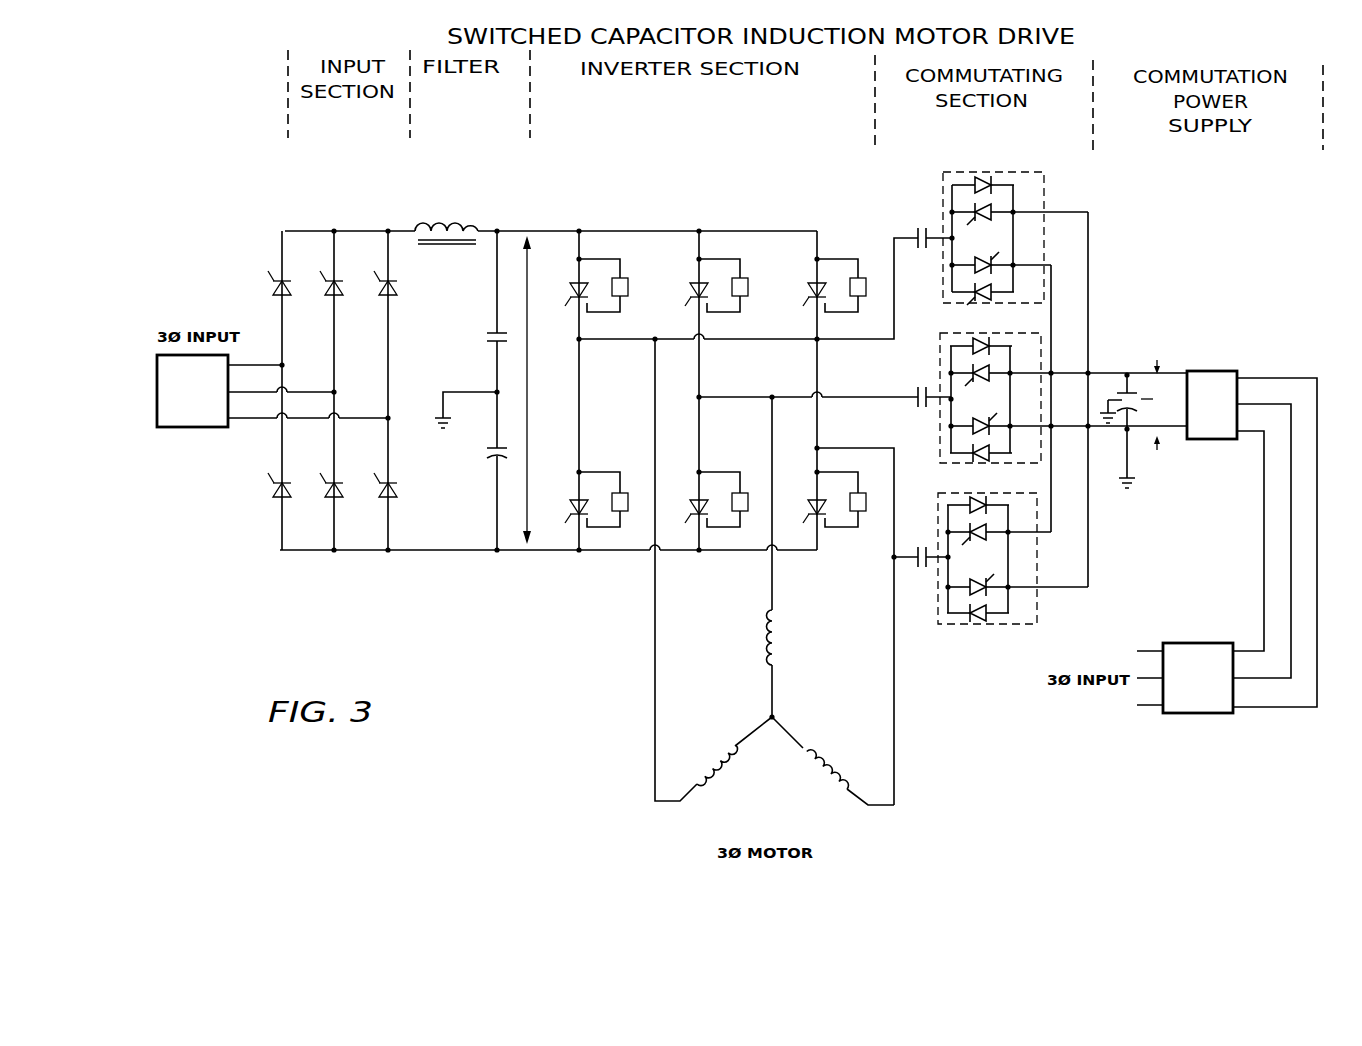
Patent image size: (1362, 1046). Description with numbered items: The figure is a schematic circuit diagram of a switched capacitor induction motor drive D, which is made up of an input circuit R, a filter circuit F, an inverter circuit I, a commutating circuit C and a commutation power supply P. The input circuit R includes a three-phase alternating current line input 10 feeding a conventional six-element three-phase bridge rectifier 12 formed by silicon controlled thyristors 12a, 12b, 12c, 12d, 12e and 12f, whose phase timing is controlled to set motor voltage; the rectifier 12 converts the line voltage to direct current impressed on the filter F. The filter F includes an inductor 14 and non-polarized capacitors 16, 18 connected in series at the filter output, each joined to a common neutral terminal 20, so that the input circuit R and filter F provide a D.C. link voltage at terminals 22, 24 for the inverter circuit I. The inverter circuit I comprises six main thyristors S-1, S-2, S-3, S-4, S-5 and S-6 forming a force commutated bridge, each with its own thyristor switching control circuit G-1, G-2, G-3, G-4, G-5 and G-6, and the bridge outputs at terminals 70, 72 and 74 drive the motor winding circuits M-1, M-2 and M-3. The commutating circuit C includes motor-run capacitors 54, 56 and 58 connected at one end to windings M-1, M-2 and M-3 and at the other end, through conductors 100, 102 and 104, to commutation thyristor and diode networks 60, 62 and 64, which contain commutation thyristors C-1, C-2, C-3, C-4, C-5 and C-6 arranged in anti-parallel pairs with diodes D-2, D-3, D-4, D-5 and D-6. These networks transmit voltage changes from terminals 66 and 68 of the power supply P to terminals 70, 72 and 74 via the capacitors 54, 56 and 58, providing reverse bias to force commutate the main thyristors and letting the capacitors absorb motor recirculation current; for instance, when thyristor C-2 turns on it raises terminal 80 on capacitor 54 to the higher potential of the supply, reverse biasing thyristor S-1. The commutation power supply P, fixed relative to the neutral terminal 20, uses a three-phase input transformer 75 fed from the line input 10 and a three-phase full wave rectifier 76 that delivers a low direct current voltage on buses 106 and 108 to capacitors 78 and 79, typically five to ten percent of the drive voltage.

The three-phase alternating current line input 10 is at (185, 428).
The three-phase bridge rectifier 12 is at (353, 582).
The silicon controlled thyristor 12a is at (291, 289).
The silicon controlled thyristor 12b is at (291, 491).
The silicon controlled thyristor 12c is at (343, 289).
The silicon controlled thyristor 12d is at (343, 491).
The silicon controlled thyristor 12e is at (397, 289).
The silicon controlled thyristor 12f is at (397, 491).
The inductor 14 is at (440, 247).
The non-polarized capacitor 16 is at (491, 333).
The non-polarized capacitor 18 is at (491, 459).
The common neutral terminal 20 is at (497, 391).
The D.C. link terminal 22 is at (497, 231).
The D.C. link terminal 24 is at (497, 550).
The motor-run capacitor 54 is at (920, 252).
The motor-run capacitor 56 is at (920, 410).
The motor-run capacitor 58 is at (920, 570).
The commutation thyristor and diode network 60 is at (1017, 234).
The commutation thyristor and diode network 62 is at (950, 398).
The commutation thyristor and diode network 64 is at (1009, 561).
The terminal 66 is at (1088, 376).
The terminal 68 is at (1051, 428).
The terminal 70 is at (655, 341).
The terminal 72 is at (772, 399).
The terminal 74 is at (818, 446).
The three-phase input transformer 75 is at (1188, 713).
The three-phase full wave rectifier 76 is at (1192, 440).
The capacitor 78 is at (1131, 389).
The capacitor 79 is at (1131, 416).
The terminal 80 is at (948, 236).
The conductor 100 is at (944, 234).
The conductor 102 is at (925, 396).
The conductor 104 is at (931, 552).
The bus 106 is at (1170, 375).
The bus 108 is at (1170, 432).
The input circuit R is at (344, 204).
The filter circuit F is at (445, 204).
The inverter circuit I is at (746, 208).
The switched capacitor induction motor drive D is at (594, 623).
The commutating circuit C is at (1035, 652).
The commutation power supply P is at (1202, 310).
The main thyristor S-1 is at (571, 292).
The main thyristor S-2 is at (571, 509).
The main thyristor S-3 is at (691, 292).
The main thyristor S-4 is at (691, 509).
The main thyristor S-5 is at (809, 292).
The main thyristor S-6 is at (809, 509).
The thyristor switching control circuit G-1 is at (630, 288).
The thyristor switching control circuit G-2 is at (630, 498).
The thyristor switching control circuit G-3 is at (750, 288).
The thyristor switching control circuit G-4 is at (750, 498).
The thyristor switching control circuit G-5 is at (868, 288).
The thyristor switching control circuit G-6 is at (868, 500).
The anti-parallel diode D-2 is at (983, 176).
The anti-parallel diode D-3 is at (978, 461).
The anti-parallel diode D-4 is at (980, 338).
The anti-parallel diode D-5 is at (977, 622).
The anti-parallel diode D-6 is at (978, 497).
The commutation thyristor C-1 is at (985, 258).
The commutation thyristor C-2 is at (984, 219).
The commutation thyristor C-3 is at (983, 420).
The commutation thyristor C-4 is at (983, 380).
The commutation thyristor C-5 is at (980, 582).
The commutation thyristor C-6 is at (980, 539).
The motor winding circuit M-1 is at (668, 803).
The motor winding circuit M-2 is at (773, 590).
The motor winding circuit M-3 is at (868, 806).